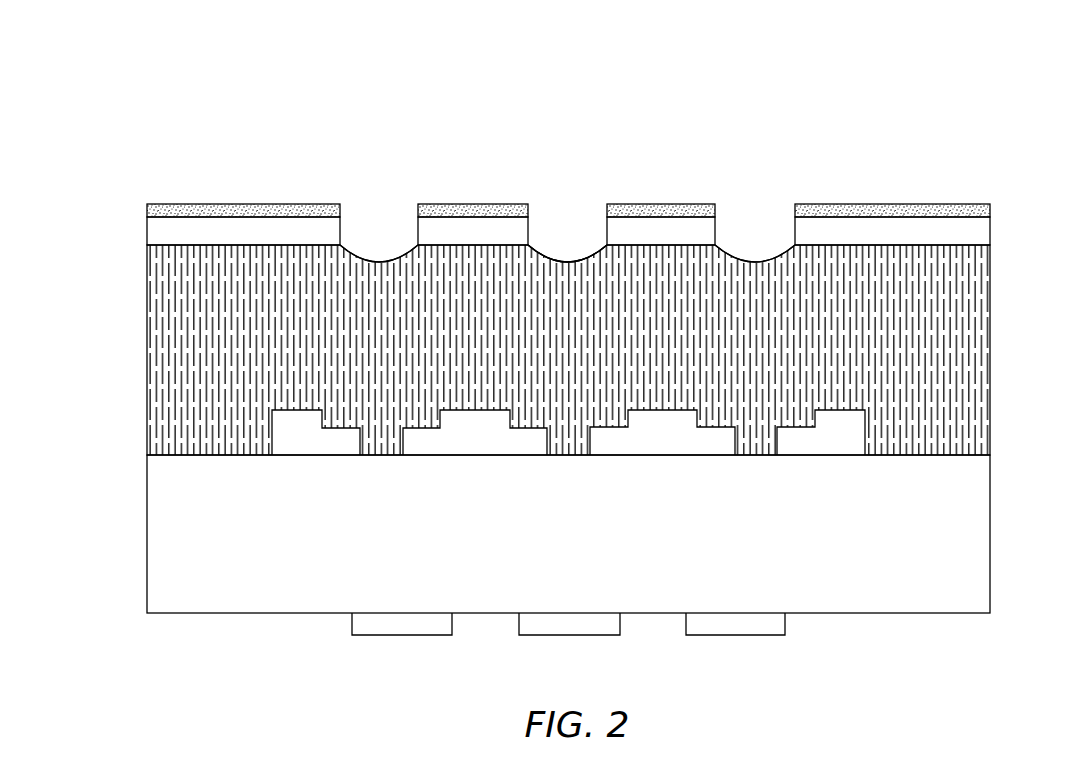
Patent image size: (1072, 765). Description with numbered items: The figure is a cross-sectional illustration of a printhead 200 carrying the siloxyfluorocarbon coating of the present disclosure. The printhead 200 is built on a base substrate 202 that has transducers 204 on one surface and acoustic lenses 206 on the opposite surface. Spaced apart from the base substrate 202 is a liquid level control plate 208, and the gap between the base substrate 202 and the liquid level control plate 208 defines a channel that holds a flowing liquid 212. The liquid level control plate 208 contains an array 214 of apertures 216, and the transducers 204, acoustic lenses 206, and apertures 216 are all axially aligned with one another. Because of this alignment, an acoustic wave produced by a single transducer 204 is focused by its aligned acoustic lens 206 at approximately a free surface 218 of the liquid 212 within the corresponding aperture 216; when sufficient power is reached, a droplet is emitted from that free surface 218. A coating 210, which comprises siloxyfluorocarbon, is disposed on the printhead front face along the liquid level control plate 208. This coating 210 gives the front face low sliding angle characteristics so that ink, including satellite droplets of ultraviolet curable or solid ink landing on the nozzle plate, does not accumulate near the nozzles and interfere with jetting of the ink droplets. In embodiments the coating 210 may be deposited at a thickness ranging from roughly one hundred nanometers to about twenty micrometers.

The printhead 200 is at (796, 80).
The base substrate 202 is at (160, 532).
The transducers 204 is at (402, 622).
The acoustic lenses 206 is at (663, 433).
The liquid level control plate 208 is at (160, 233).
The coating 210 is at (242, 203).
The flowing liquid 212 is at (160, 330).
The array 214 is at (559, 116).
The apertures 216 is at (570, 218).
The free surface 218 is at (395, 248).